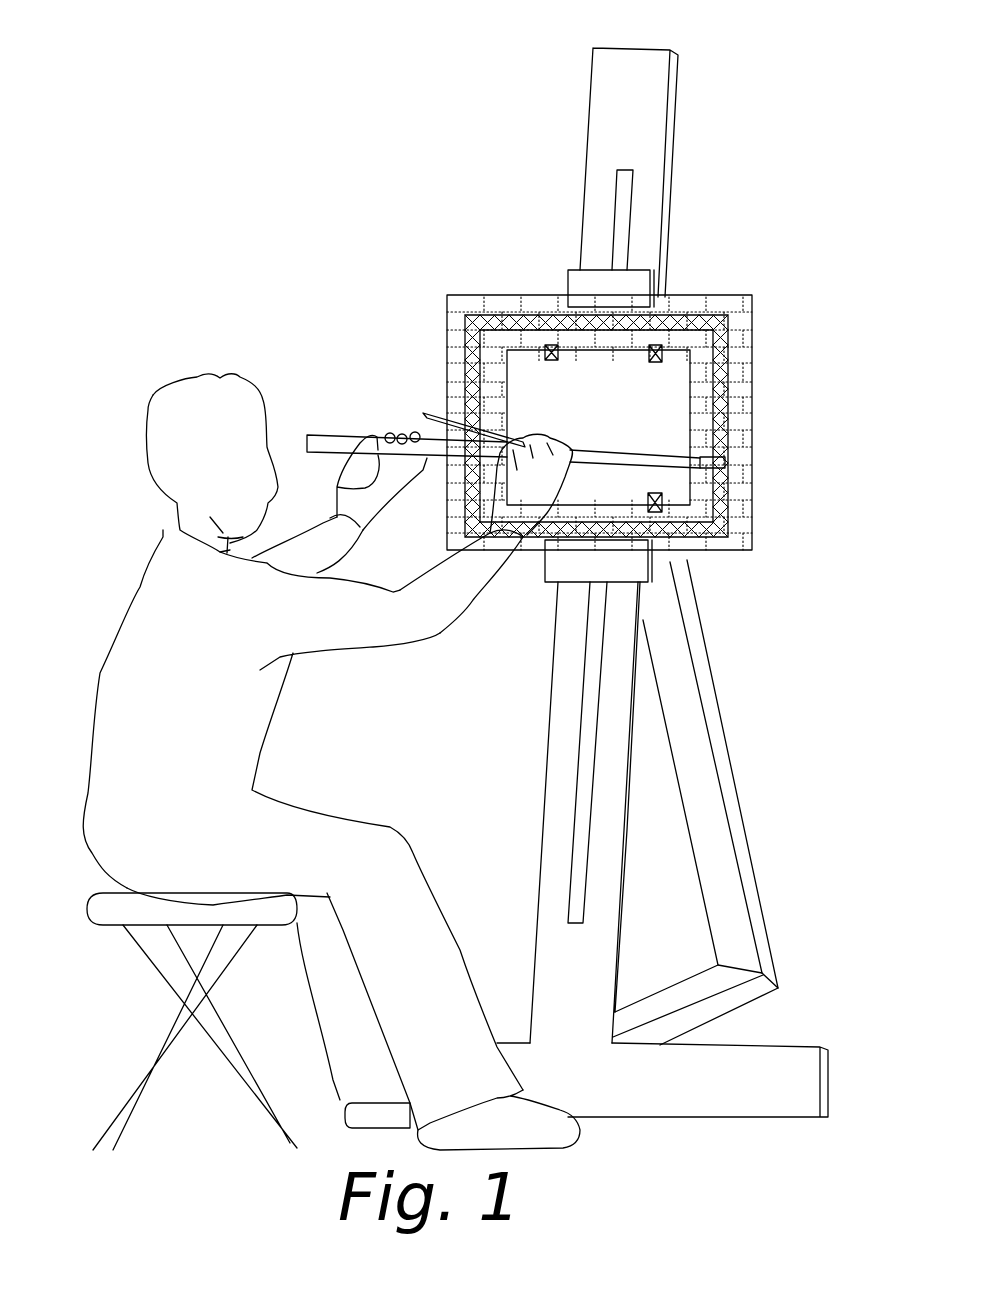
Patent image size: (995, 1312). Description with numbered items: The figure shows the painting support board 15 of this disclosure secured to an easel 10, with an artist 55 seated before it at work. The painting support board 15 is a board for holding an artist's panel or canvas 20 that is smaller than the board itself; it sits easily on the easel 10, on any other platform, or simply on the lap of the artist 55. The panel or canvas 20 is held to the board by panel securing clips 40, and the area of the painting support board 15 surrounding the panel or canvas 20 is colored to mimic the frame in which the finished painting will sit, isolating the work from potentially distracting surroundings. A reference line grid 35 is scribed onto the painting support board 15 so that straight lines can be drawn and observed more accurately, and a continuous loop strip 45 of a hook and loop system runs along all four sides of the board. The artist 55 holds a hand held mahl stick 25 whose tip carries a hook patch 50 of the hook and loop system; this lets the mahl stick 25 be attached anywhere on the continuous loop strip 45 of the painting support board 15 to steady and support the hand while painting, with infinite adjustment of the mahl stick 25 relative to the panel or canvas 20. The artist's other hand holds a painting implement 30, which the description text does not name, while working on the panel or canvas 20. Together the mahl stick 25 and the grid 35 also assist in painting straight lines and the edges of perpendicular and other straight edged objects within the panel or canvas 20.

The easel 10 is at (662, 195).
The painting support board 15 is at (751, 297).
The artist's panel or canvas 20 is at (690, 390).
The mahl stick 25 is at (325, 433).
The brush 30 is at (432, 412).
The reference line grid 35 is at (738, 488).
The panel securing clips 40 is at (553, 345).
The continuous loop strip 45 is at (465, 318).
The hook patch 50 is at (706, 457).
The artist 55 is at (133, 600).